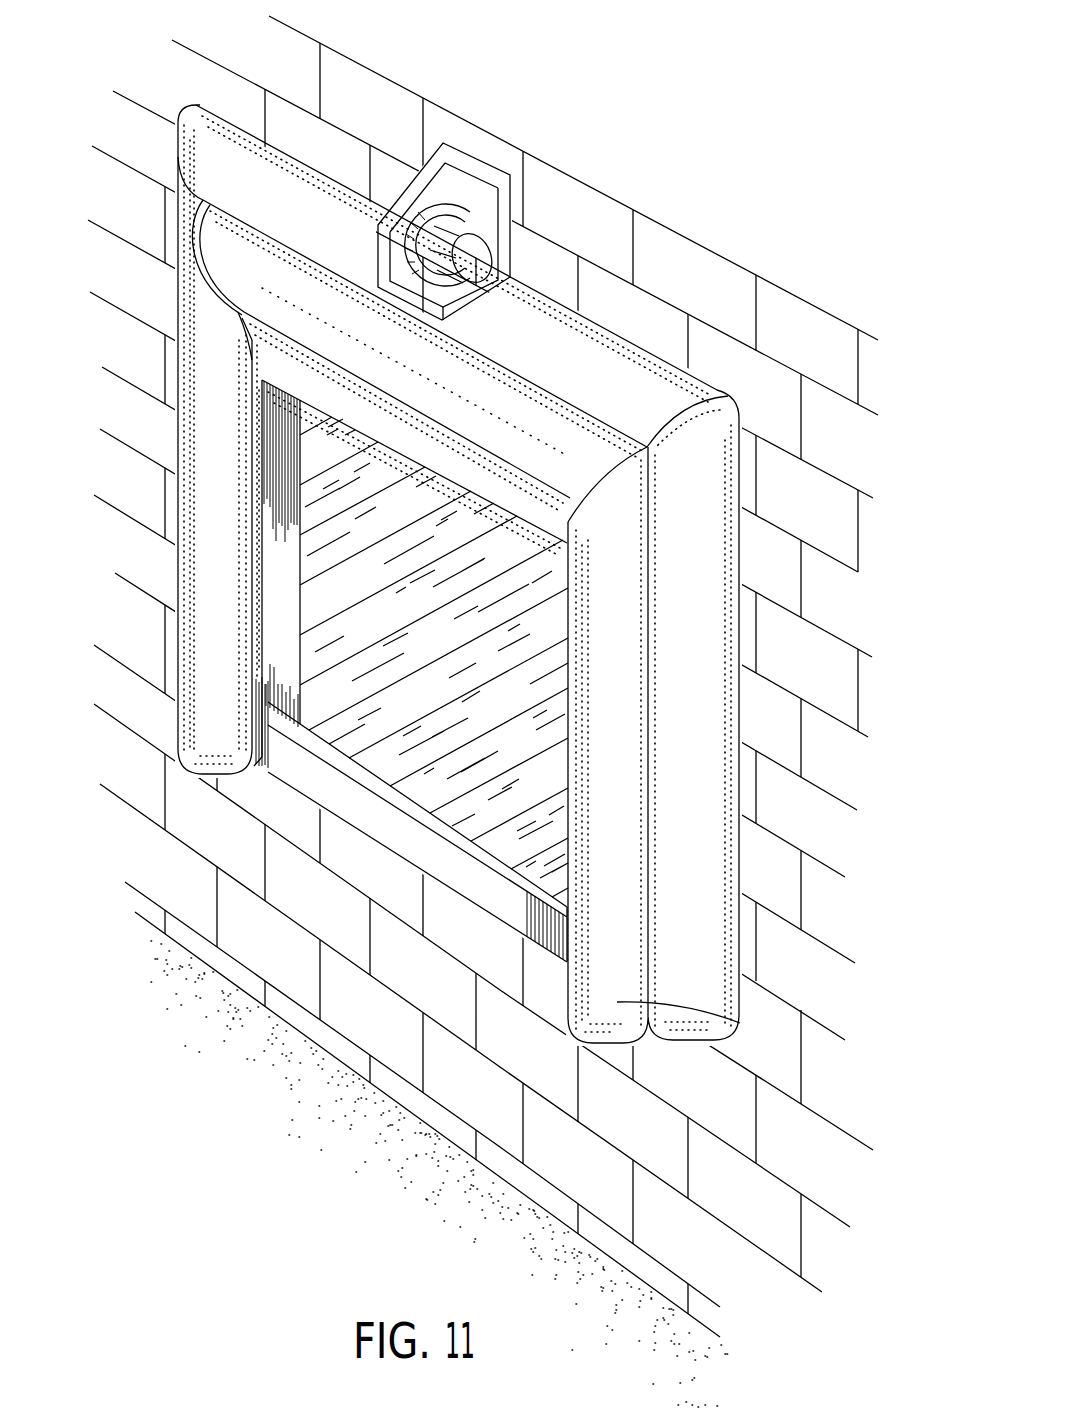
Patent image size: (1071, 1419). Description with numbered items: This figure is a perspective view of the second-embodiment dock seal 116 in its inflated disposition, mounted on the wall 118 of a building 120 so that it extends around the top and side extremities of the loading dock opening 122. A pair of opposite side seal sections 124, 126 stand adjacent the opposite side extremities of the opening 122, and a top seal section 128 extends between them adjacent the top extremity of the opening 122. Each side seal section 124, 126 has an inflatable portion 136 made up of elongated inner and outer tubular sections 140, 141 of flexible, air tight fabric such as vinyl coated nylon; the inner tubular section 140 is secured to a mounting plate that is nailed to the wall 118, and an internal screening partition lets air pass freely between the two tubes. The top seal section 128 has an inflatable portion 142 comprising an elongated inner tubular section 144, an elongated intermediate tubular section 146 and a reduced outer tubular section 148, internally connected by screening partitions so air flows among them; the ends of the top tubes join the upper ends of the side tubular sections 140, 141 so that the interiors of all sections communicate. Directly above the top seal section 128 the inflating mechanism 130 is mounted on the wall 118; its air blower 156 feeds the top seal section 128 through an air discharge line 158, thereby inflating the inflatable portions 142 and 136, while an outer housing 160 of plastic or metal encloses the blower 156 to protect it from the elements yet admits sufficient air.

The dock seal 116 is at (846, 626).
The wall 118 is at (332, 918).
The building 120 is at (292, 972).
The loading dock opening 122 is at (332, 751).
The side seal section 124 is at (191, 593).
The side seal section 126 is at (700, 740).
The top seal section 128 is at (603, 368).
The inflating mechanism 130 is at (490, 165).
The inflatable portion 136 is at (199, 708).
The inner tubular section 140 is at (252, 442).
The outer tubular section 141 is at (199, 520).
The inflatable portion 142 is at (575, 445).
The inner tubular section 144 is at (334, 210).
The intermediate tubular section 146 is at (225, 265).
The outer tubular section 148 is at (255, 350).
The air blower 156 is at (512, 231).
The air discharge line 158 is at (535, 288).
The outer housing 160 is at (443, 163).